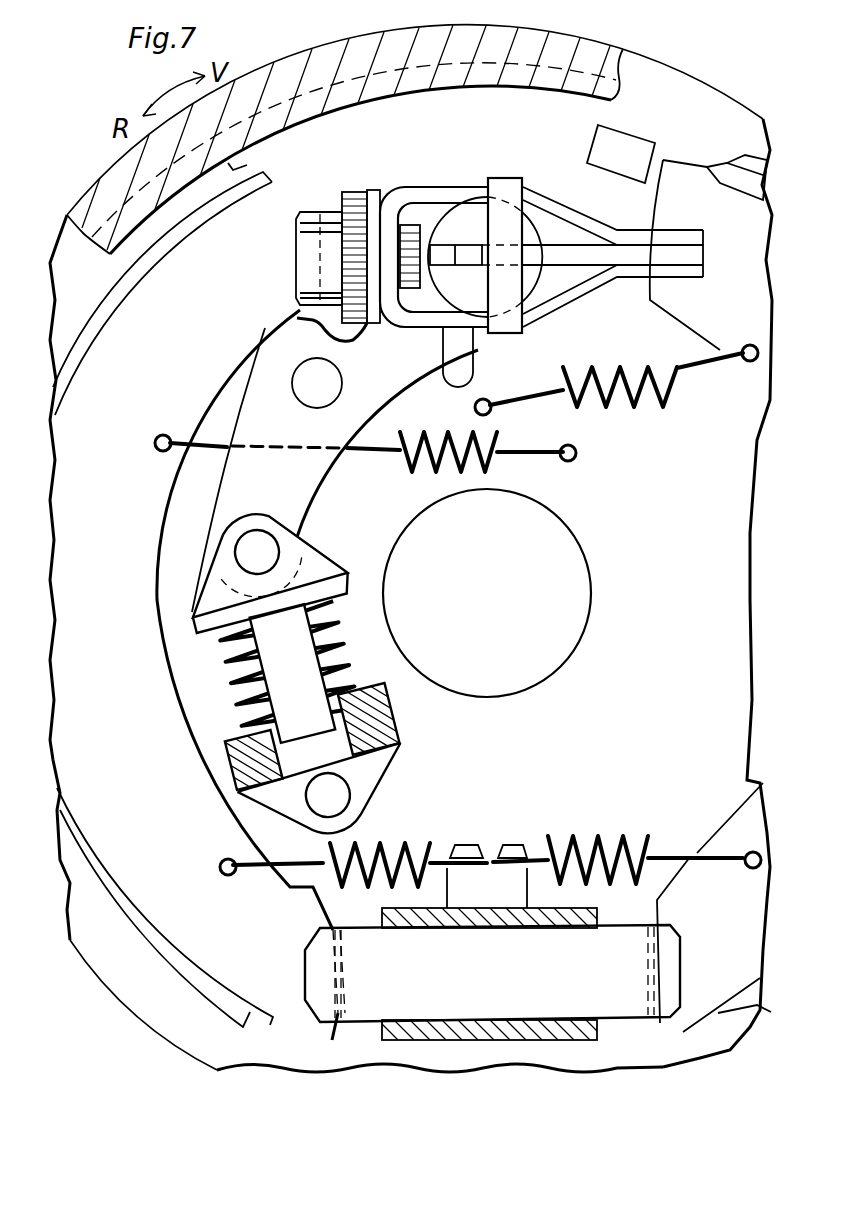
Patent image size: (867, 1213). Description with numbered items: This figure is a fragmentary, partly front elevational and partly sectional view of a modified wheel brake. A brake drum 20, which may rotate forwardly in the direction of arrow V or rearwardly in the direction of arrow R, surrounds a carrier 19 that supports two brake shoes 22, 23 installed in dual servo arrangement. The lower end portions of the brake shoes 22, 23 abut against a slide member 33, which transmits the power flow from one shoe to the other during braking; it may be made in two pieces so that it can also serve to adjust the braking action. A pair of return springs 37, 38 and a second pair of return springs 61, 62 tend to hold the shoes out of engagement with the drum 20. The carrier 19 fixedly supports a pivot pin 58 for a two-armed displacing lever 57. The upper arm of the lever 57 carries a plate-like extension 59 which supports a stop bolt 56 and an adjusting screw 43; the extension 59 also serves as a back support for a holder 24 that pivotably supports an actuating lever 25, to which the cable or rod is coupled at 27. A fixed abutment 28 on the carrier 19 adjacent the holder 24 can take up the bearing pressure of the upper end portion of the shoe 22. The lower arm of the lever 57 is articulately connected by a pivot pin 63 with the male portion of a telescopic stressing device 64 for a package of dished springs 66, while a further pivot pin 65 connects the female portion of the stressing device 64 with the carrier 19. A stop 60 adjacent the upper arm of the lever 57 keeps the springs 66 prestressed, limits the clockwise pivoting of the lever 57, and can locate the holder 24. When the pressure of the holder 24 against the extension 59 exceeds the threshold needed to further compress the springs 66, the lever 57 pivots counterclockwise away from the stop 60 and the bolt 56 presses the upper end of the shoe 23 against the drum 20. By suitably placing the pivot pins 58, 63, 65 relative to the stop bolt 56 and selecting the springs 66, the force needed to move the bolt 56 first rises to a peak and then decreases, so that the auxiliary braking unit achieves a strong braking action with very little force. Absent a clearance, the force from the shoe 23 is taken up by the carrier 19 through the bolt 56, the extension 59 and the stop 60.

The carrier 19 is at (706, 102).
The brake drum 20 is at (300, 62).
The brake shoe 22 is at (746, 362).
The brake shoe 23 is at (298, 176).
The holder 24 is at (423, 190).
The actuating lever 25 is at (555, 250).
The coupling point 27 is at (467, 250).
The fixed abutment 28 is at (633, 143).
The slide member 33 is at (612, 1003).
The return spring 37 is at (592, 838).
The return spring 38 is at (393, 845).
The adjusting screw 43 is at (357, 205).
The stop bolt 56 is at (300, 255).
The displacing lever 57 is at (315, 478).
The pivot pin 58 is at (305, 380).
The plate-like extension 59 is at (373, 195).
The stop 60 is at (462, 360).
The return spring 61 is at (616, 404).
The return spring 62 is at (543, 463).
The pivot pin 63 is at (242, 552).
The telescopic stressing device 64 is at (385, 737).
The pivot pin 65 is at (340, 793).
The dished springs 66 is at (240, 672).